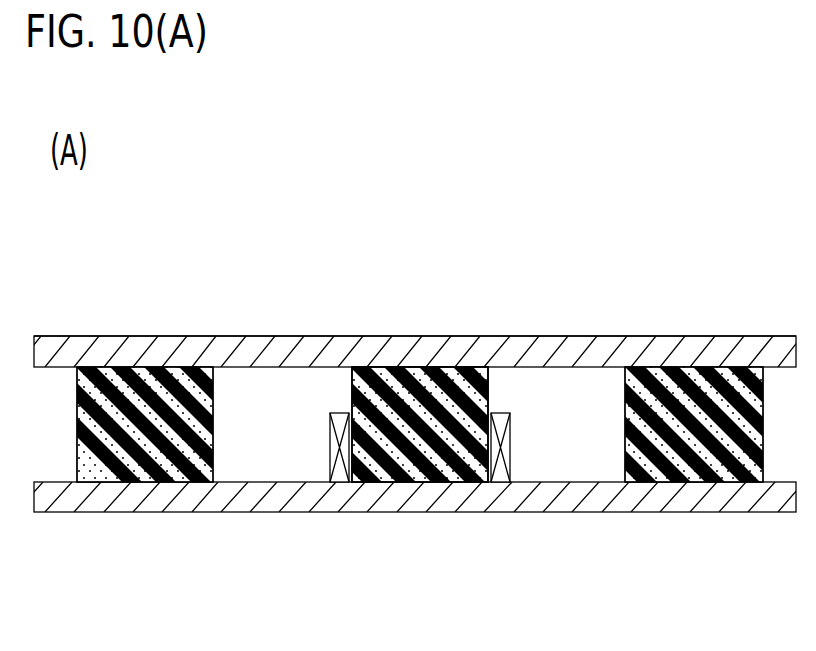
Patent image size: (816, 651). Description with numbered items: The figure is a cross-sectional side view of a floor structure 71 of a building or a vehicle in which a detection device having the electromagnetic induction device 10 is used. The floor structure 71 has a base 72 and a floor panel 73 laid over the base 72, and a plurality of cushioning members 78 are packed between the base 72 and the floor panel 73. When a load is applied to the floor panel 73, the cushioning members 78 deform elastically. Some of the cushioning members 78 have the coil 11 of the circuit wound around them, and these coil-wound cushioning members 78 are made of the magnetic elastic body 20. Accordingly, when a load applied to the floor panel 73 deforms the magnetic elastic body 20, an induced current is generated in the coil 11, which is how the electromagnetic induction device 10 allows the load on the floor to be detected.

The floor structure 71 is at (716, 334).
The base 72 is at (680, 485).
The floor panel 73 is at (528, 357).
The cushioning member 78 is at (218, 378).
The magnetic elastic body 20 is at (470, 483).
The electromagnetic induction device 10 is at (328, 455).
The coil 11 is at (510, 447).